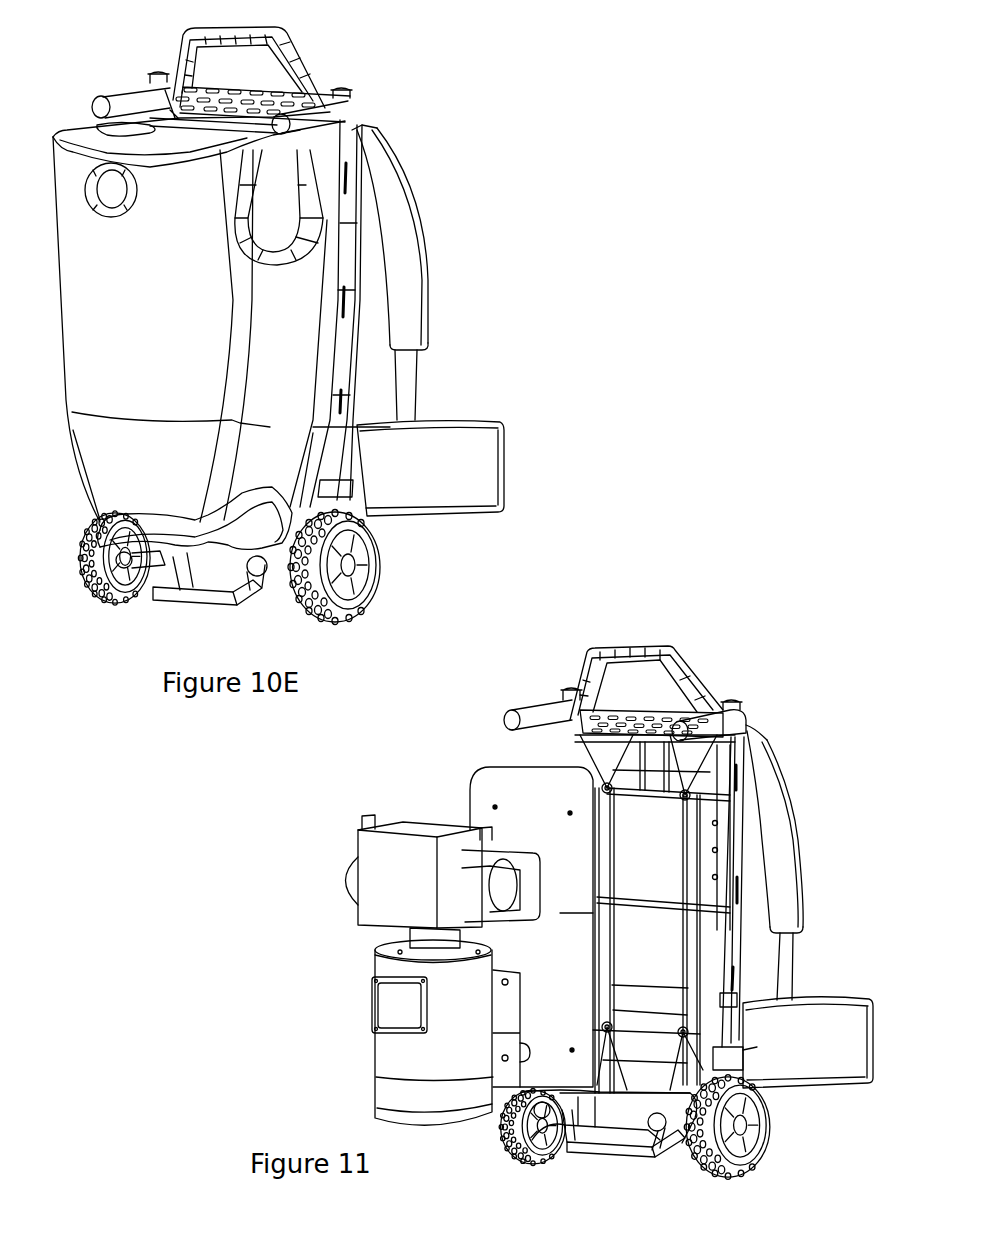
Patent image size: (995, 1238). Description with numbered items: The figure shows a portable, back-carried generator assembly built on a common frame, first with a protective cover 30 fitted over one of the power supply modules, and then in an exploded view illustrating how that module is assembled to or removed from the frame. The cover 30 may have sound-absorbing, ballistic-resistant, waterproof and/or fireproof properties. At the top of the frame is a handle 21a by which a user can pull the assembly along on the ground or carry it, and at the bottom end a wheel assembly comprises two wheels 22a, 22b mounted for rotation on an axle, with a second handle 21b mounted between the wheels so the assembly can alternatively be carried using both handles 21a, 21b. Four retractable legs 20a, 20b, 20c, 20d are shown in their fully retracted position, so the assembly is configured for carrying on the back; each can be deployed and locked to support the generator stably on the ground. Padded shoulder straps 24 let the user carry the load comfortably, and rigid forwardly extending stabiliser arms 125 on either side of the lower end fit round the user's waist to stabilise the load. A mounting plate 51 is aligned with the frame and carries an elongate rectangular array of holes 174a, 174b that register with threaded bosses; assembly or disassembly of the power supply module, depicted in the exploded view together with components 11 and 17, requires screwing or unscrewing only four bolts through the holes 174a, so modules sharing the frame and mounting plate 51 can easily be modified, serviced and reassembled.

In FIG. 11, the motor 11 is at (378, 1053).
In FIG. 11, the blower housing 17 is at (357, 853).
In FIG. 10E, the retractable leg 20a is at (317, 108).
In FIG. 11, the retractable leg 20a is at (712, 725).
In FIG. 10E, the retractable leg 20b is at (142, 95).
In FIG. 11, the retractable leg 20b is at (530, 703).
In FIG. 10E, the retractable leg 20c is at (158, 560).
In FIG. 11, the retractable leg 20c is at (567, 1115).
In FIG. 10E, the retractable leg 20d is at (277, 572).
In FIG. 11, the retractable leg 20d is at (679, 1130).
In FIG. 10E, the handle 21a is at (286, 38).
In FIG. 11, the handle 21a is at (677, 650).
In FIG. 10E, the handle 21b is at (203, 605).
In FIG. 11, the handle 21b is at (605, 1160).
In FIG. 10E, the wheel 22a is at (92, 593).
In FIG. 11, the wheel 22a is at (506, 1140).
In FIG. 10E, the wheel 22b is at (383, 587).
In FIG. 11, the wheel 22b is at (766, 1151).
In FIG. 10E, the shoulder straps 24 is at (413, 200).
In FIG. 11, the shoulder straps 24 is at (777, 770).
In FIG. 10E, the protective cover 30 is at (85, 438).
In FIG. 11, the mounting plate 51 is at (487, 782).
In FIG. 10E, the stabiliser arms 125 is at (468, 420).
In FIG. 11, the stabiliser arms 125 is at (820, 992).
In FIG. 11, the holes 174a is at (568, 813).
In FIG. 11, the holes 174b is at (572, 1050).